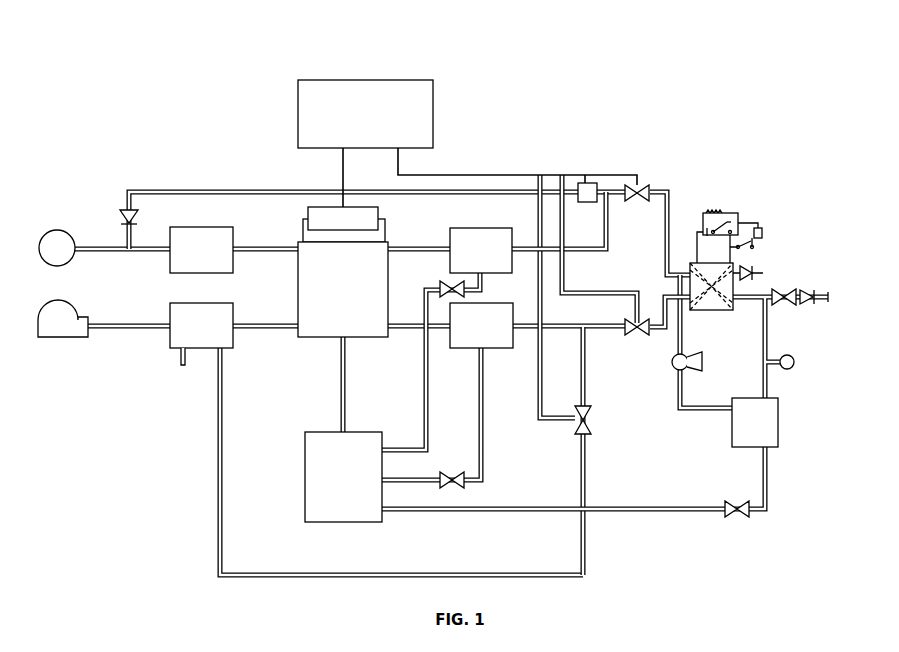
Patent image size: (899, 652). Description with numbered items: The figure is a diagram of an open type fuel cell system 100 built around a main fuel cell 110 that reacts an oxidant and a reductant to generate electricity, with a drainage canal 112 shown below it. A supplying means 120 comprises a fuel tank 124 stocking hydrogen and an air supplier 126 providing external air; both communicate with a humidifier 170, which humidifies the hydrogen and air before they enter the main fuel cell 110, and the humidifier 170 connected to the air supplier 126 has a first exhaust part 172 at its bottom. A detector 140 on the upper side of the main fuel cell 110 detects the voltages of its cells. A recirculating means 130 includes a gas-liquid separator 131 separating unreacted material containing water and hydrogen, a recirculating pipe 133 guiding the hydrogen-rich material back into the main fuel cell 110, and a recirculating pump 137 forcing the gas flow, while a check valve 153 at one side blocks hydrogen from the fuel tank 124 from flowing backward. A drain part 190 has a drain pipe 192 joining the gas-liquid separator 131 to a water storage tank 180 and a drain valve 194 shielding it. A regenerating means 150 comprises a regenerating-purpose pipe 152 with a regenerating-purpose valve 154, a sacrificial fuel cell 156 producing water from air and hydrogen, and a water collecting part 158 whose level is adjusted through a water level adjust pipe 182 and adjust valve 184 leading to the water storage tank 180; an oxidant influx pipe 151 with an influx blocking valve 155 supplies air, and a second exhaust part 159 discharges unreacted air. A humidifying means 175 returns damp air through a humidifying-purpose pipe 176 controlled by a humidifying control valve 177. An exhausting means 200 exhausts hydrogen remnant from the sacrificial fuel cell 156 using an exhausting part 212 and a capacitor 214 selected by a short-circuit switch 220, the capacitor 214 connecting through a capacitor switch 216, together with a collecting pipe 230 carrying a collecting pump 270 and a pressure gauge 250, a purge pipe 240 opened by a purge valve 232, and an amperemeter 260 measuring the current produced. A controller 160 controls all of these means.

The open type fuel cell system 100 is at (231, 103).
The main fuel cell 110 is at (300, 338).
The drainage canal 112 is at (341, 407).
The supplying means 120 is at (92, 283).
The fuel tank 124 is at (64, 266).
The air supplier 126 is at (74, 312).
The recirculating means 130 is at (507, 137).
The gas-liquid separator 131 is at (510, 230).
The recirculating pipe 133 is at (609, 220).
The recirculating pump 137 is at (586, 175).
The detector 140 is at (310, 214).
The regenerating means 150 is at (810, 125).
The oxidant influx pipe 151 is at (662, 300).
The regenerating-purpose pipe 152 is at (655, 190).
The check valve 153 is at (124, 216).
The regenerating-purpose valve 154 is at (650, 189).
The influx blocking valve 155 is at (637, 335).
The sacrificial fuel cell 156 is at (770, 292).
The water collecting part 158 is at (765, 420).
The second exhaust part 159 is at (763, 274).
The controller 160 is at (368, 80).
The humidifier 170 is at (233, 263).
The first exhaust part 172 is at (183, 366).
The humidifying means 175 is at (602, 460).
The humidifying-purpose pipe 176 is at (584, 388).
The humidifying control valve 177 is at (590, 424).
The water storage tank 180 is at (308, 487).
The water level adjust pipe 182 is at (668, 514).
The adjust valve 184 is at (730, 517).
The drain part 190 is at (488, 445).
The drain pipe 192 is at (481, 290).
The drain valve 194 is at (460, 296).
The exhausting means 200 is at (699, 213).
The exhausting part 212 is at (712, 211).
The capacitor 214 is at (708, 232).
The capacitor switch 216 is at (728, 222).
The short-circuit switch 220 is at (752, 249).
The collecting pipe 230 is at (678, 391).
The purge valve 232 is at (780, 302).
The purge pipe 240 is at (822, 302).
The pressure gauge 250 is at (795, 362).
The amperemeter 260 is at (763, 233).
The collecting pump 270 is at (690, 360).